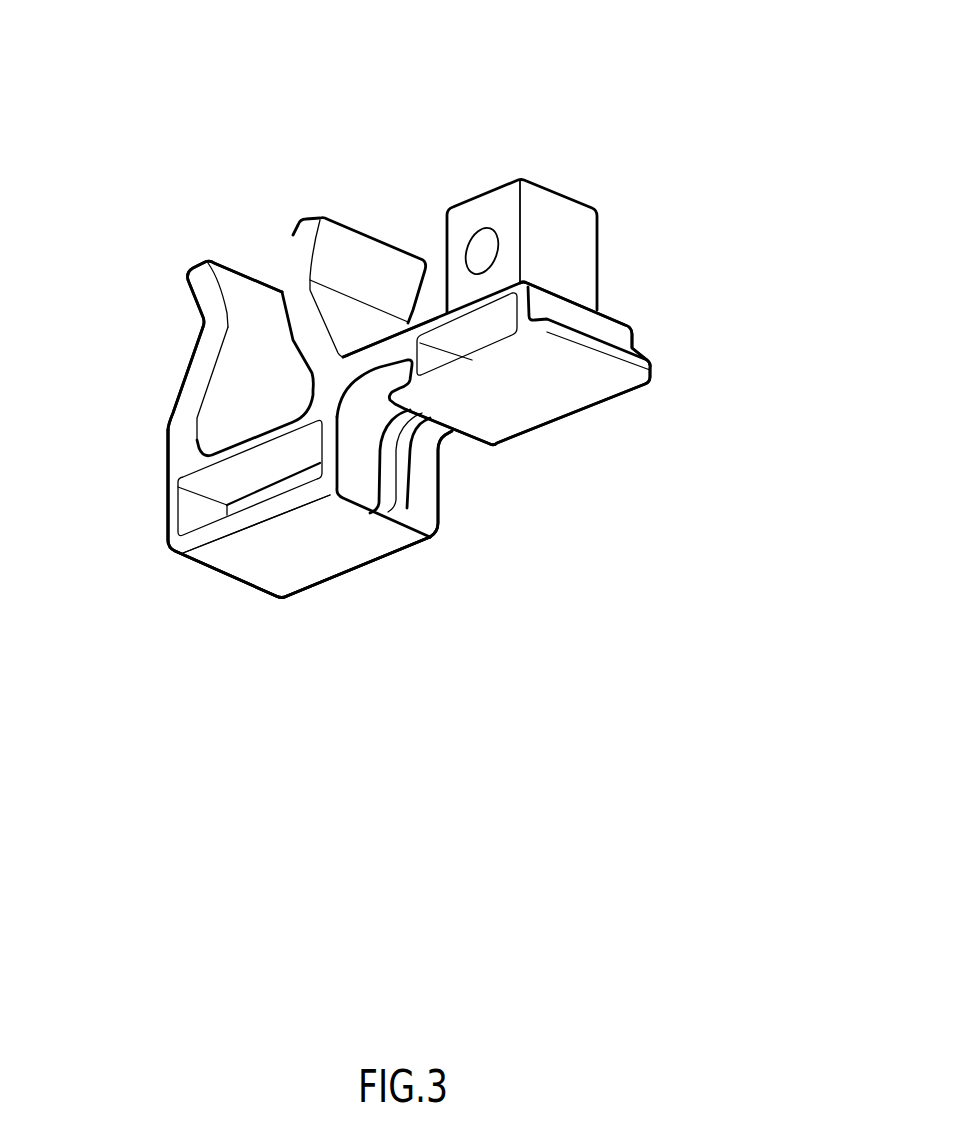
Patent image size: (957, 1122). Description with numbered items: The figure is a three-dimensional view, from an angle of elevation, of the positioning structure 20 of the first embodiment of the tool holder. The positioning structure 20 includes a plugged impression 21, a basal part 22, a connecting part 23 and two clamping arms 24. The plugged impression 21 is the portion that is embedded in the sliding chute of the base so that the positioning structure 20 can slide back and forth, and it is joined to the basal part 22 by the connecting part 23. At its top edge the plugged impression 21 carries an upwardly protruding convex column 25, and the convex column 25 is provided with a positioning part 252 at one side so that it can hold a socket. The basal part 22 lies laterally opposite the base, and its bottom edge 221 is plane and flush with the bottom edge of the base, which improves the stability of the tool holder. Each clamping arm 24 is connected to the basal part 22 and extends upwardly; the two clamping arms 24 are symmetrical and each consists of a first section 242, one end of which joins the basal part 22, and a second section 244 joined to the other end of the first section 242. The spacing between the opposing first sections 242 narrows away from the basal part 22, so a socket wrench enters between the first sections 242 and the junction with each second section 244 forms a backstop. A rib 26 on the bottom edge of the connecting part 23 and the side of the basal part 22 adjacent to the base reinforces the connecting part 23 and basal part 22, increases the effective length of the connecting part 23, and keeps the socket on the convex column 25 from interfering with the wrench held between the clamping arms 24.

The positioning structure 20 is at (506, 133).
The plugged impression 21 is at (595, 343).
The basal part 22 is at (303, 470).
The bottom edge 221 is at (308, 558).
The connecting part 23 is at (380, 353).
The clamping arm 24 is at (156, 350).
The first section 242 is at (158, 383).
The second section 244 is at (202, 290).
The convex column 25 is at (532, 226).
The positioning part 252 is at (483, 248).
The rib 26 is at (400, 460).